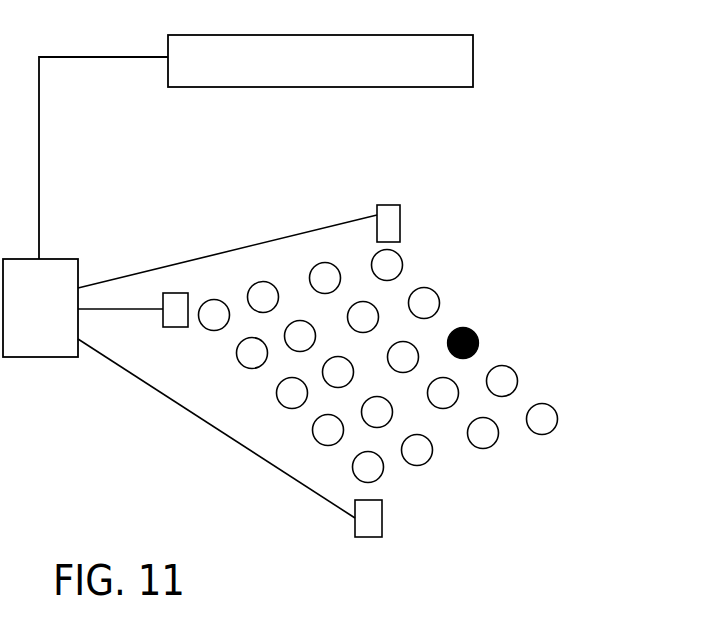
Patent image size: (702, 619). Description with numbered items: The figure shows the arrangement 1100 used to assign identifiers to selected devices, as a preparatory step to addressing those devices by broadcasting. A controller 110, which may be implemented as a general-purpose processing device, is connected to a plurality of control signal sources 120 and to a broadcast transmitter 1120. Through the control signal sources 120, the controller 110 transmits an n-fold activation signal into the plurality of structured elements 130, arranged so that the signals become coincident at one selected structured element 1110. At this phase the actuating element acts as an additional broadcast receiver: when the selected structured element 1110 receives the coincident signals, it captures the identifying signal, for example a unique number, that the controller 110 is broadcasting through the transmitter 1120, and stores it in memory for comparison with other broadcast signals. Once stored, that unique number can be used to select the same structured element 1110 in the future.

The system 1100 is at (643, 56).
The broadcast transmitter 1120 is at (325, 78).
The controller 110 is at (63, 393).
The control signal sources 120 is at (202, 369).
The structured elements 130 is at (565, 486).
The selected structured element 1110 is at (560, 315).